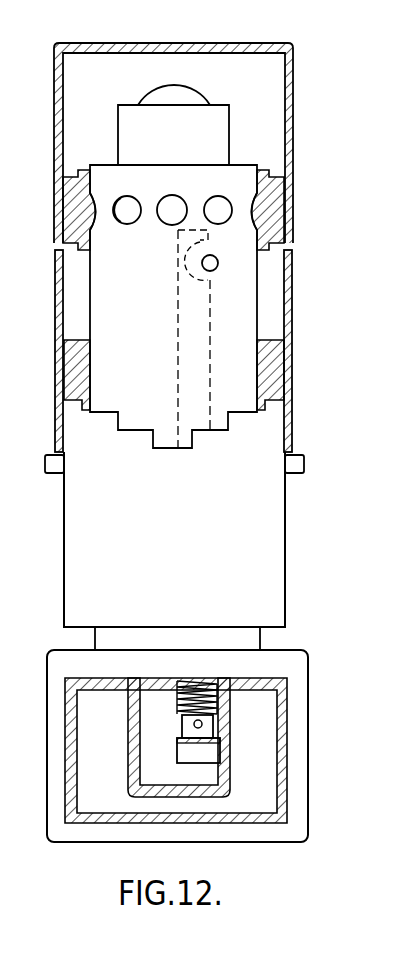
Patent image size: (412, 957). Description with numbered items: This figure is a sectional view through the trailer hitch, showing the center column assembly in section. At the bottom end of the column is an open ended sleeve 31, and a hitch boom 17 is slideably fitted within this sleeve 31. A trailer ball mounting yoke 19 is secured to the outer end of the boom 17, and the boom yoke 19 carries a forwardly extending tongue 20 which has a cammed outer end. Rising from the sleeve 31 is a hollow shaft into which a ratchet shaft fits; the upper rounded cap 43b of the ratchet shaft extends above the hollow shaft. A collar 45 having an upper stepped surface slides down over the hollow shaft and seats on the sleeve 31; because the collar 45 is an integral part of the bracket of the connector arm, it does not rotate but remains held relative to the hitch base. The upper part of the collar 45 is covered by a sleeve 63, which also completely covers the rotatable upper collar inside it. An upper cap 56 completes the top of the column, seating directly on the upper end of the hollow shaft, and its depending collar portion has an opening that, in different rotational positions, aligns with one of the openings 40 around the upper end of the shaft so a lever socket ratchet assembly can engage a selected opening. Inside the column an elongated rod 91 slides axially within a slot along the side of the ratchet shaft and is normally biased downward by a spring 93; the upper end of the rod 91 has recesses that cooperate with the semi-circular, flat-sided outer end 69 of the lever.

The upper cap 56 is at (257, 43).
The upper rounded cap of the ratchet shaft 43b is at (183, 100).
The openings 40 is at (213, 210).
The outer end of lever 69 is at (216, 261).
The elongated rod 91 is at (203, 345).
The sleeve 63 is at (292, 360).
The collar 45 is at (260, 458).
The spring 93 is at (178, 688).
The hitch boom 17 is at (284, 682).
The trailer ball mounting yoke 19 is at (181, 722).
The forwardly extending tongue 20 is at (203, 742).
The open ended sleeve 31 is at (293, 713).